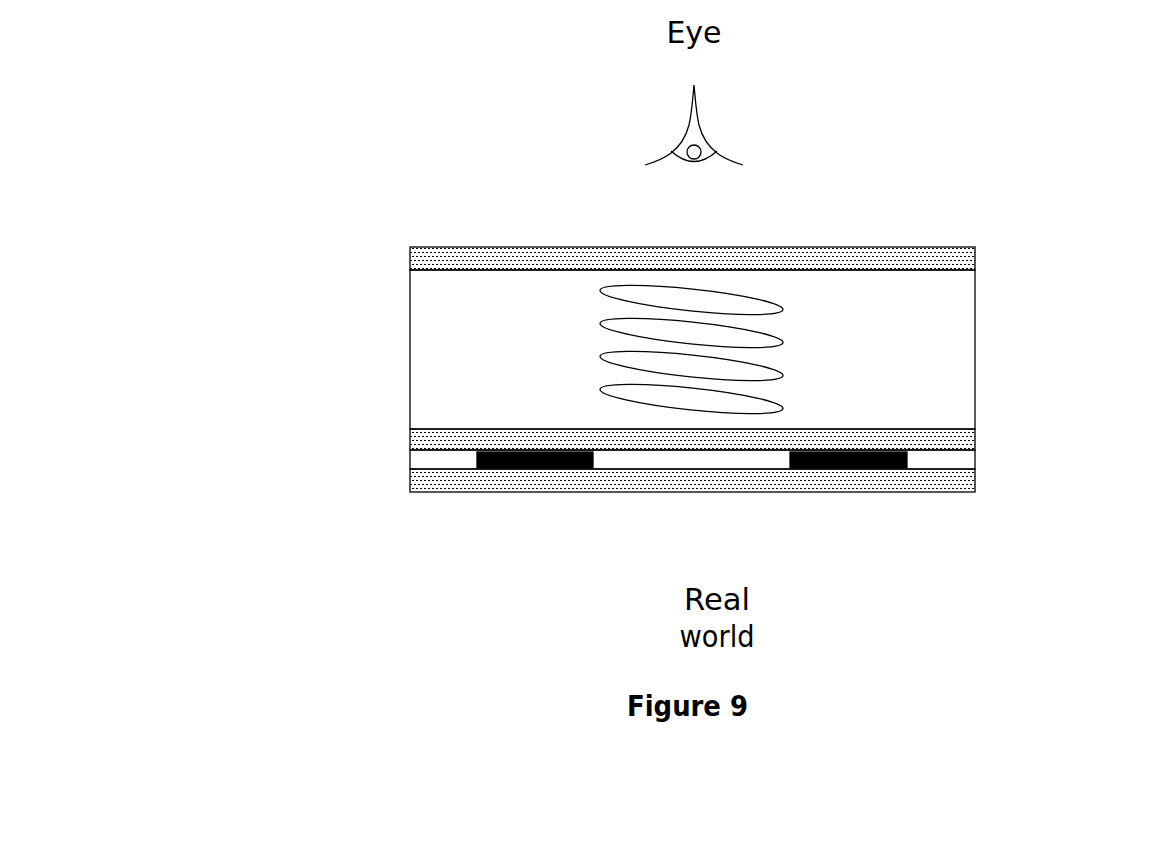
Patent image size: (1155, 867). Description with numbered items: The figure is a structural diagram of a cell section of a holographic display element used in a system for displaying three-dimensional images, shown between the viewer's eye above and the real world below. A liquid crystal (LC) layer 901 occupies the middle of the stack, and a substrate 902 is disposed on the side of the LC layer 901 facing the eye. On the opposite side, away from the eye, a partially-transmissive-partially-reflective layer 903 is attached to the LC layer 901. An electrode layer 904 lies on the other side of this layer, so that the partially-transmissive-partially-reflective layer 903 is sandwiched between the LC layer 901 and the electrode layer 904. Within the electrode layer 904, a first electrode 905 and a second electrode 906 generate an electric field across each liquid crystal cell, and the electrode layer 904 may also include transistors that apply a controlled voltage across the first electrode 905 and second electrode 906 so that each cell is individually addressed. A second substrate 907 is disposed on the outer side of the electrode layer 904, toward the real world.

The liquid crystal layer 901 is at (405, 352).
The substrate 902 is at (405, 258).
The partially-transmissive-partially-reflective layer 903 is at (980, 439).
The electrode layer 904 is at (405, 460).
The first electrode 905 is at (535, 470).
The second electrode 906 is at (848, 473).
The substrate 907 is at (980, 479).